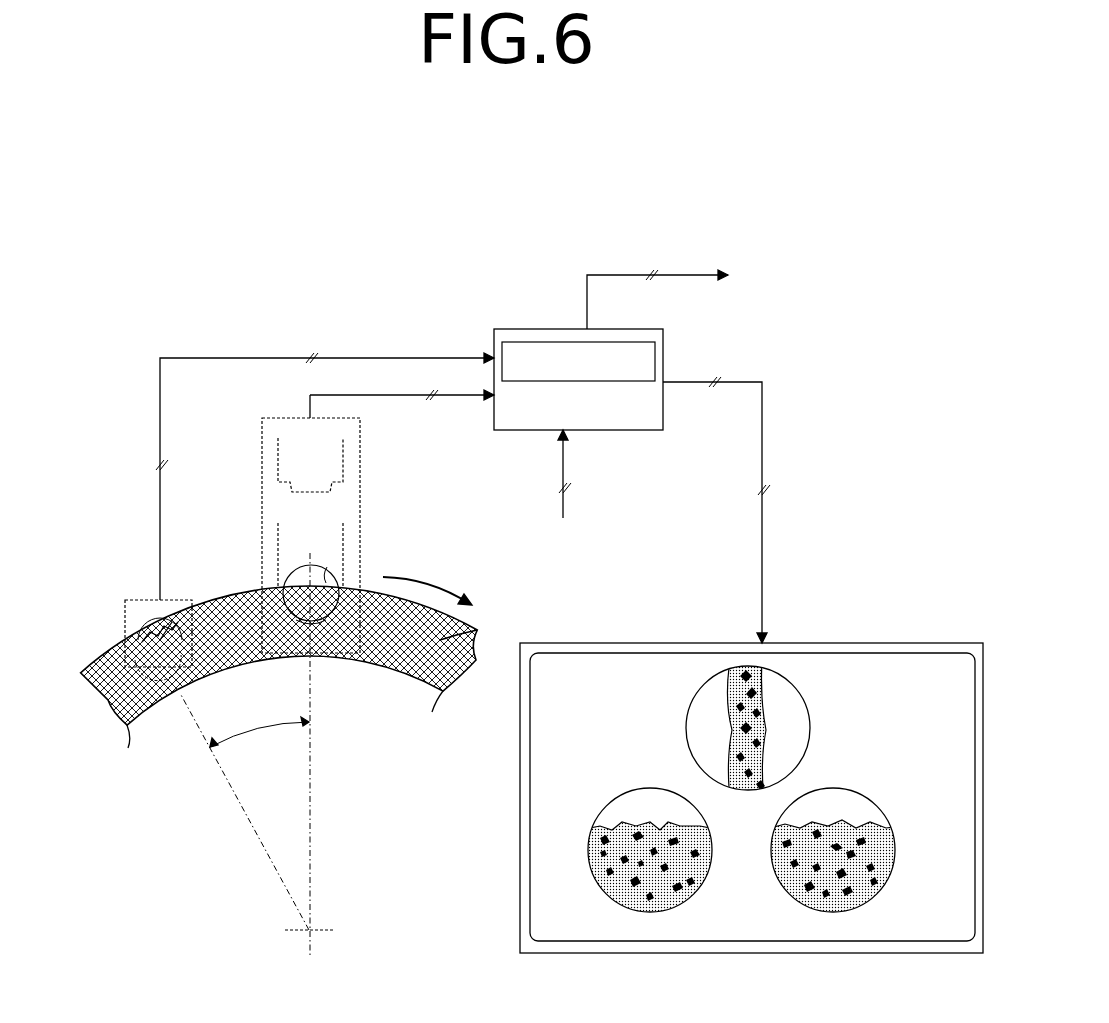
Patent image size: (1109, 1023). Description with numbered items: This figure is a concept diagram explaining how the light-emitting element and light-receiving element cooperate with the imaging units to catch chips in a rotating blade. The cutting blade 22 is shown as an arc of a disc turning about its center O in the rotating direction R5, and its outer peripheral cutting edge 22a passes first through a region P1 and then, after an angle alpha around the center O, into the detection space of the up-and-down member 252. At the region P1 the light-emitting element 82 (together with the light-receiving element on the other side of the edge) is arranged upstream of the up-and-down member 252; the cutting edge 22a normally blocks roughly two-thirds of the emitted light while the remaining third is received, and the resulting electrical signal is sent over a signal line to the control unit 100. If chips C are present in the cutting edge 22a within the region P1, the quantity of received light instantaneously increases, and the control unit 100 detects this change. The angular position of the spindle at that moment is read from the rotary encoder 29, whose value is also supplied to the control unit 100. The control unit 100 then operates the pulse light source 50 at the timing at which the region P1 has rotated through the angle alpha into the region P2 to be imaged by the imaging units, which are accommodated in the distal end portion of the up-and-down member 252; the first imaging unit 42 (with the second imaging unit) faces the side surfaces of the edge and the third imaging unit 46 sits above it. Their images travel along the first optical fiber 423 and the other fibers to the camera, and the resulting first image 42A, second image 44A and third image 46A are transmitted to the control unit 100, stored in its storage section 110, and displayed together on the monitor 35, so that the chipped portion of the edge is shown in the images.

The cutting blade 22 is at (428, 700).
The cutting edge 22a is at (470, 630).
The rotation center O is at (310, 757).
The angle alpha is at (244, 811).
The region to be detected P1 is at (125, 610).
The light-emitting element 82 is at (143, 590).
The chips C is at (172, 613).
The up-and-down member 252 is at (262, 458).
The third imaging unit 46 is at (343, 462).
The first imaging unit 42 is at (348, 537).
The region to be imaged P2 is at (327, 567).
The rotating direction R5 is at (440, 588).
The first optical fiber 423 is at (395, 397).
The control unit 100 is at (598, 432).
The storage section 110 is at (542, 342).
The pulse light source 50 is at (680, 299).
The rotary encoder 29 is at (563, 491).
The monitor 35 is at (887, 642).
The third image 46A is at (807, 702).
The first image 42A is at (632, 785).
The second image 44A is at (863, 797).